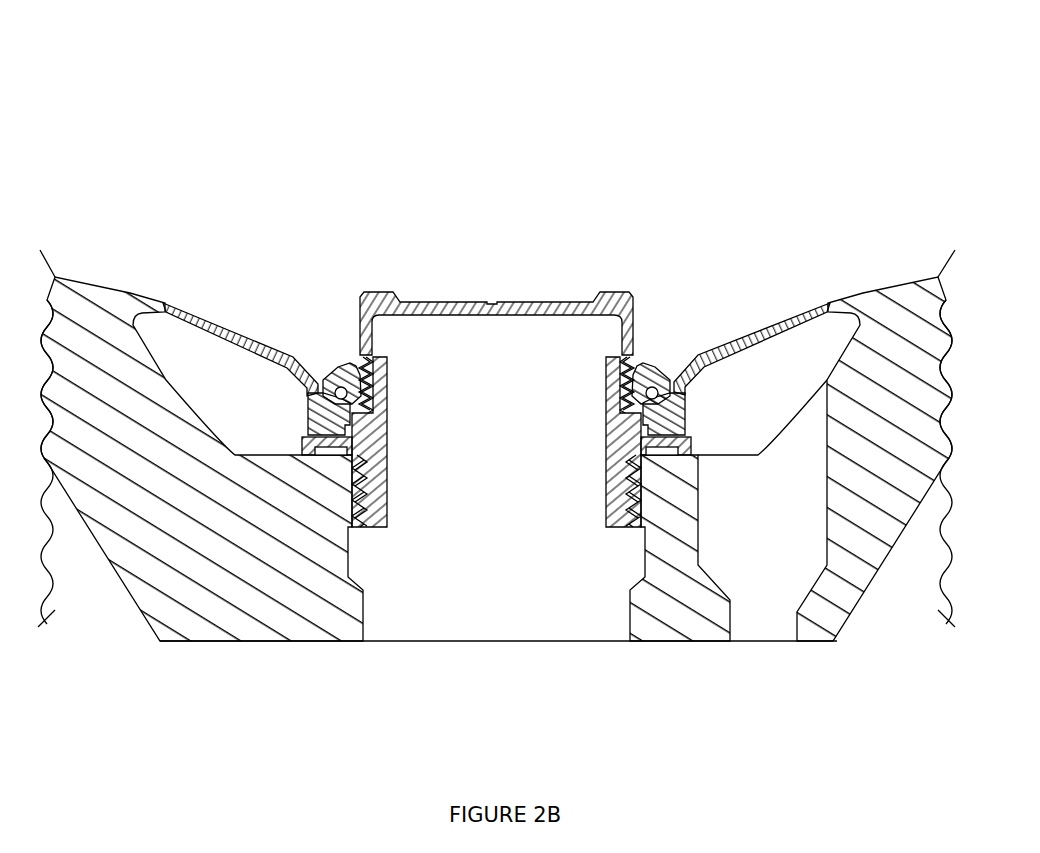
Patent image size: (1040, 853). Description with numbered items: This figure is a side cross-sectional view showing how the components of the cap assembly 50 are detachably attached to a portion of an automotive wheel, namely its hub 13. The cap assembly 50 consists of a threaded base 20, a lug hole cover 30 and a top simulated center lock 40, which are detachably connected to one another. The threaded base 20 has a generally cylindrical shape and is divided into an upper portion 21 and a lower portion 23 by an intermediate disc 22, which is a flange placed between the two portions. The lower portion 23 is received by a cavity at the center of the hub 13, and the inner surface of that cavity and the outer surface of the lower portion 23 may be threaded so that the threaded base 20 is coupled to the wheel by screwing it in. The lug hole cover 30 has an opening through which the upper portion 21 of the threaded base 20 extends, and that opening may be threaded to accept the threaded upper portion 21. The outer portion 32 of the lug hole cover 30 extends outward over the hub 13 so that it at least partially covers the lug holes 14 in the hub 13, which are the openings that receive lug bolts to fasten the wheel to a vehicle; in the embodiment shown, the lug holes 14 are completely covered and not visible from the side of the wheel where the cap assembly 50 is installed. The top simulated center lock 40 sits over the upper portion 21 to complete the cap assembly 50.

The hub 13 is at (215, 443).
The lug holes 14 is at (768, 565).
The threaded base 20 is at (385, 407).
The upper portion 21 is at (375, 380).
The intermediate disc 22 is at (327, 440).
The lower portion 23 is at (370, 490).
The lug hole cover 30 is at (698, 353).
The outer portion 32 is at (777, 323).
The top simulated center lock 40 is at (510, 301).
The cap assembly 50 is at (736, 213).